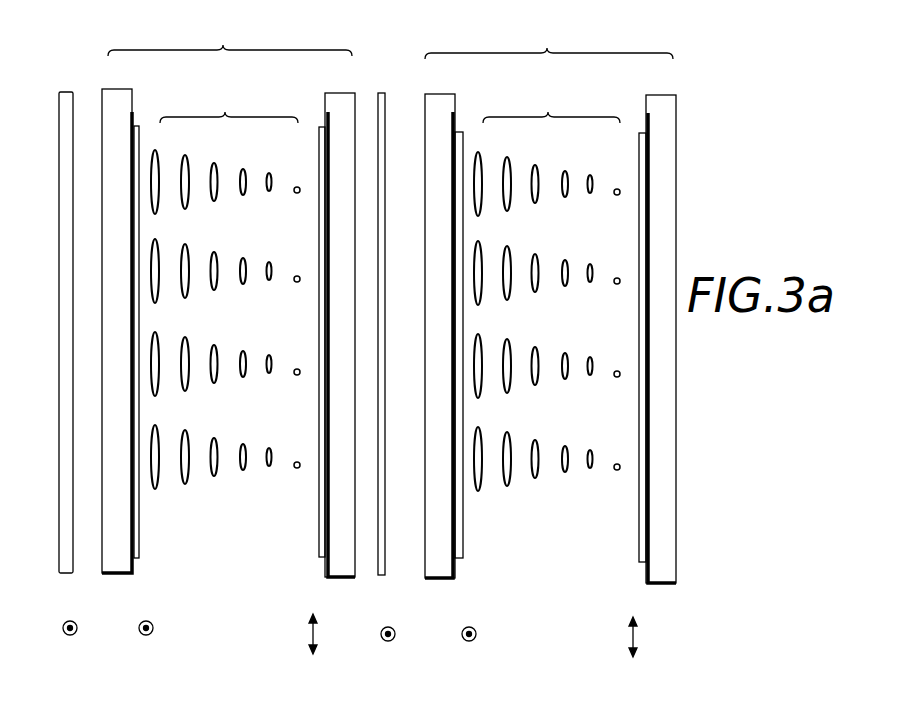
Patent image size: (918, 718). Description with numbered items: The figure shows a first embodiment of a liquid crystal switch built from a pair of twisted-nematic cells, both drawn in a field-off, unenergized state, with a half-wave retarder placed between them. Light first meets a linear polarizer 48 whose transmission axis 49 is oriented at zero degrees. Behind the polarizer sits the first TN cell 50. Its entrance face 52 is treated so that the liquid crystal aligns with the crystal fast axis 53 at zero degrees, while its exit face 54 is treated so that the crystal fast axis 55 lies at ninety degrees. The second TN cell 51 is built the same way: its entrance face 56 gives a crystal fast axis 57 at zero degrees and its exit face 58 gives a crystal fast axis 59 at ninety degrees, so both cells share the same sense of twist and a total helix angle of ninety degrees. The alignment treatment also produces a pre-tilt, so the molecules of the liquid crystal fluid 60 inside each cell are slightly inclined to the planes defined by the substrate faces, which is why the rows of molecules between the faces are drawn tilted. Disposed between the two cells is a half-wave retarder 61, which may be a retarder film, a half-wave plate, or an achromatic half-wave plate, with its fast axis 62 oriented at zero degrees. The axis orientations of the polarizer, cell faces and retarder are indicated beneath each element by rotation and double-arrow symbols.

The linear polarizer 48 is at (66, 92).
The transmission axis 49 is at (63, 630).
The TN cell 50 is at (230, 34).
The TN cell 51 is at (549, 255).
The entrance face 52 is at (114, 85).
The crystal fast axis 53 is at (139, 630).
The exit face 54 is at (350, 93).
The crystal fast axis 55 is at (311, 633).
The entrance face 56 is at (432, 86).
The crystal fast axis 57 is at (462, 636).
The exit face 58 is at (650, 86).
The crystal fast axis 59 is at (631, 636).
The liquid crystal fluid 60 is at (225, 282).
The half-wave retarder 61 is at (381, 93).
The fast axis 62 is at (381, 636).